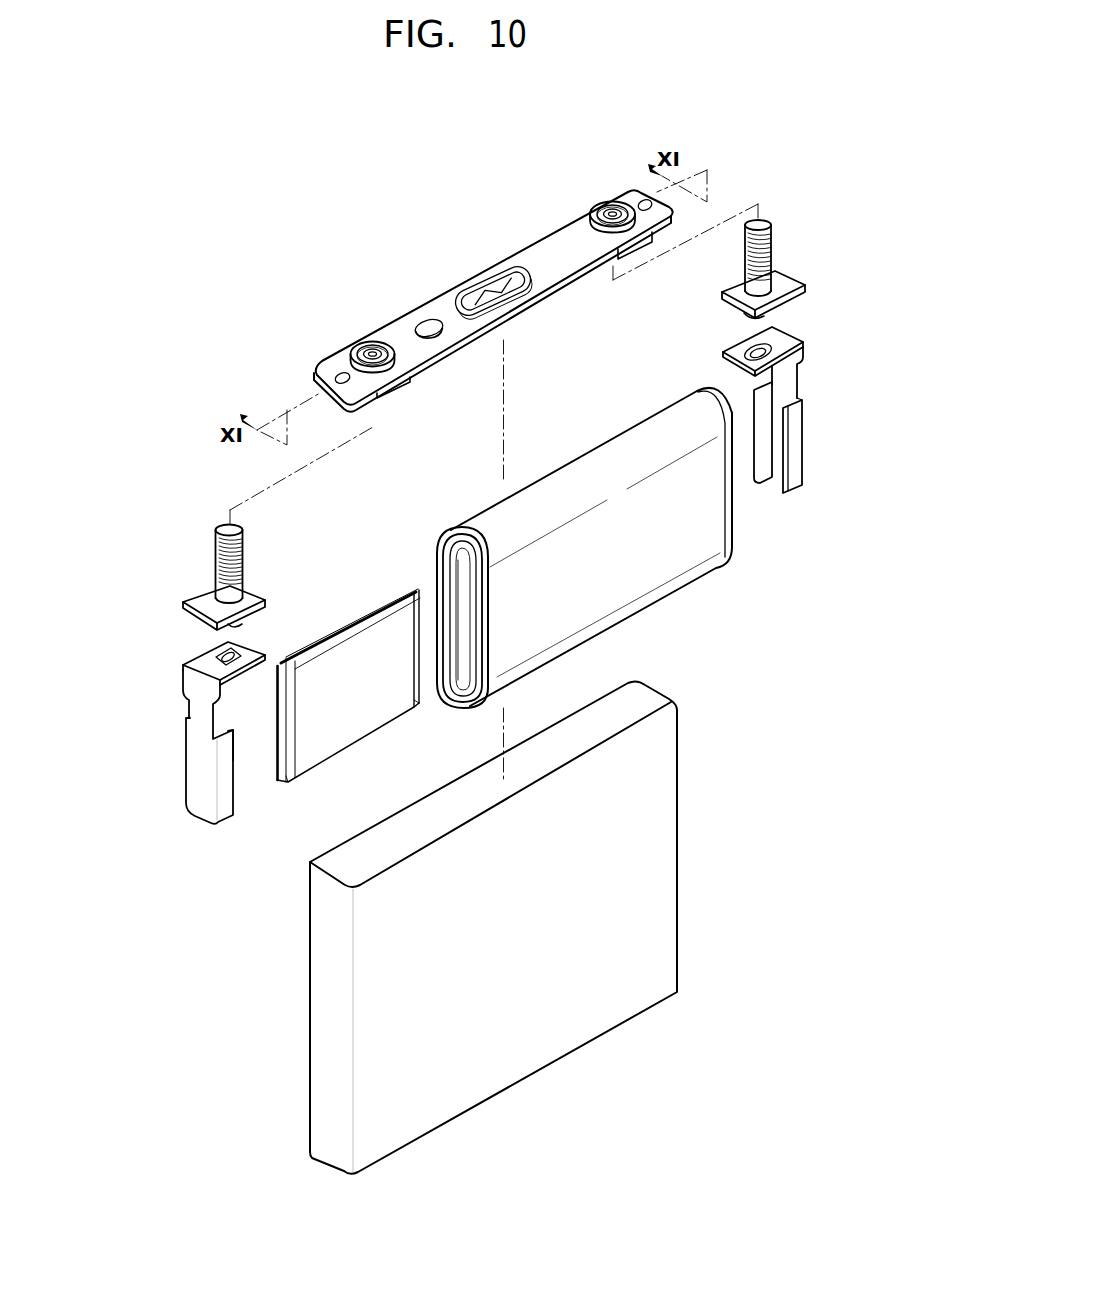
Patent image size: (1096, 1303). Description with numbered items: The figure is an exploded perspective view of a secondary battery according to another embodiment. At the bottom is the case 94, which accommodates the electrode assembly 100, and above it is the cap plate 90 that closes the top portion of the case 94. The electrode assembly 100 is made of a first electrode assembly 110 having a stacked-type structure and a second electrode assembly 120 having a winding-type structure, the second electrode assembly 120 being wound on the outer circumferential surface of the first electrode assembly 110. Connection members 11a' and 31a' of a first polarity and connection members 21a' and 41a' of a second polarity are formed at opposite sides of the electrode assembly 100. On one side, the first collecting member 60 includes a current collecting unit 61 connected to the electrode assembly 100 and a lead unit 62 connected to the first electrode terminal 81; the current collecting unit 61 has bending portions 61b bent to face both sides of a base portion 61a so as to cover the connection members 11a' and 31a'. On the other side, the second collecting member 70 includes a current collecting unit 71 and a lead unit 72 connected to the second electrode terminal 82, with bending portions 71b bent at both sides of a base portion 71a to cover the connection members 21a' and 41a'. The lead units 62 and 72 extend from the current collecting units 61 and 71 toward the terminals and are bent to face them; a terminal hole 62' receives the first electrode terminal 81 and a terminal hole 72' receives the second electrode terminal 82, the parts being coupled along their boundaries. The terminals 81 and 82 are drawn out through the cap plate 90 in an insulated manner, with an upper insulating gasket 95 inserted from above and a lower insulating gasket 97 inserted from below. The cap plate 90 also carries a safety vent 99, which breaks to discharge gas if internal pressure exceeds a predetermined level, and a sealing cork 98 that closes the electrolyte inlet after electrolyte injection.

The cap plate 90 is at (537, 222).
The upper insulating gasket 95 is at (371, 358).
The lower insulating gasket 97 is at (397, 388).
The sealing cork 98 is at (427, 325).
The safety vent 99 is at (490, 289).
The second electrode terminal 82 is at (763, 228).
The first electrode terminal 81 is at (228, 531).
The second collecting member 70 is at (892, 337).
The lead unit 72 is at (795, 352).
The terminal hole 72' is at (738, 335).
The current collecting unit 71 is at (852, 410).
The base portion 71a is at (780, 461).
The bending portions 71b is at (795, 420).
The first collecting member 60 is at (82, 770).
The lead unit 62 is at (189, 672).
The terminal hole 62' is at (257, 635).
The current collecting unit 61 is at (123, 727).
The base portion 61a is at (200, 780).
The bending portions 61b is at (230, 758).
The electrode assembly 100 is at (406, 480).
The first electrode assembly 110 is at (376, 601).
The second electrode assembly 120 is at (467, 511).
The connection member 11a' is at (280, 802).
The connection member 41a' is at (438, 724).
The connection member 31a' is at (519, 632).
The connection member 21a' is at (757, 505).
The case 94 is at (672, 700).